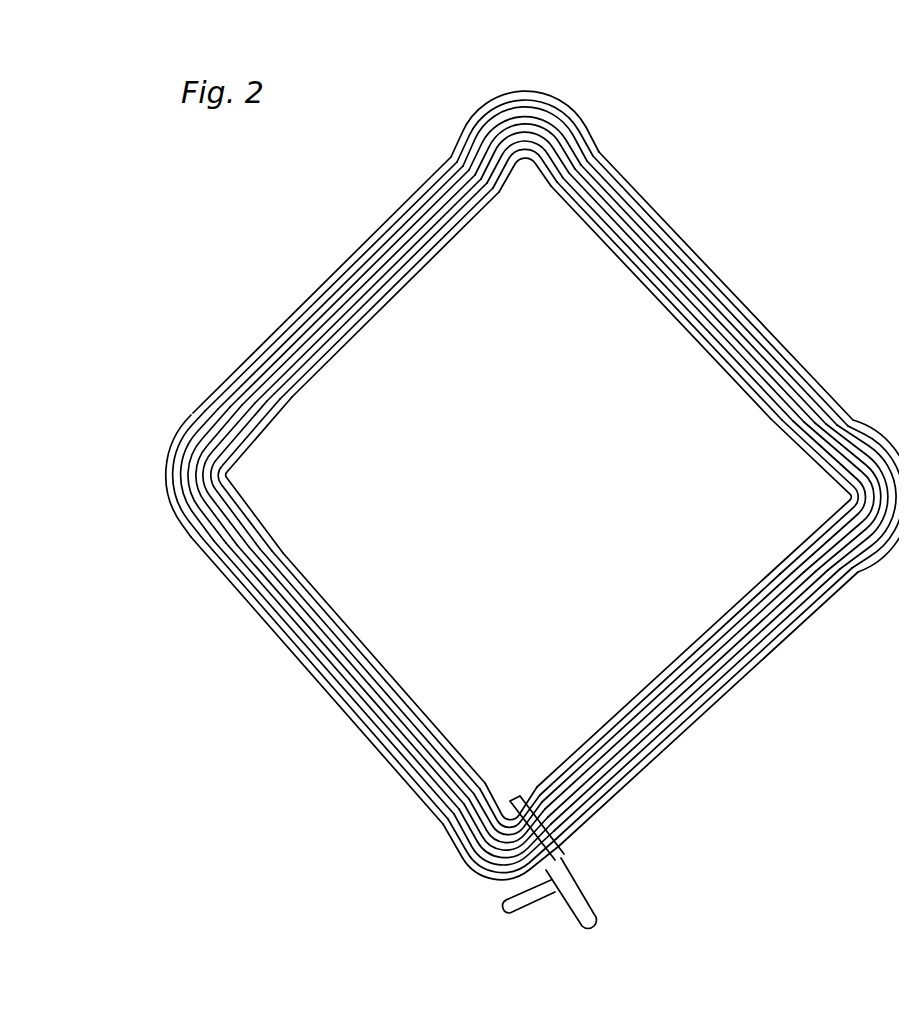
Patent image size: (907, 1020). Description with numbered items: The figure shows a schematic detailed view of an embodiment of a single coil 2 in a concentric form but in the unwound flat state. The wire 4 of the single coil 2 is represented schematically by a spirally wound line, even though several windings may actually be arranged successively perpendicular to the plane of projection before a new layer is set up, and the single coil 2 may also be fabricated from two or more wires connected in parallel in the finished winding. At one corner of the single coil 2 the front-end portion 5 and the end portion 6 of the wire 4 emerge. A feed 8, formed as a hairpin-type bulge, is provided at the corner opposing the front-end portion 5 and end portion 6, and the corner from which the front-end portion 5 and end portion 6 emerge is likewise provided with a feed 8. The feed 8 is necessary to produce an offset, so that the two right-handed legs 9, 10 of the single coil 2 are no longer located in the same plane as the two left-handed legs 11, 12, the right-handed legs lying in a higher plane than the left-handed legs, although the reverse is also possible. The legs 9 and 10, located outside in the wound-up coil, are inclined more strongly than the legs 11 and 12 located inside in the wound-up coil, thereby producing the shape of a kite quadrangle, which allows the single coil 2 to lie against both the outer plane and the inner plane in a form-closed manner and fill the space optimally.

The single coil 2 is at (532, 516).
The wire 4 is at (740, 668).
The front-end portion 5 is at (546, 828).
The end portion 6 is at (550, 899).
The feed 8 is at (508, 780).
The right-handed leg 9 is at (702, 289).
The right-handed leg 10 is at (694, 703).
The left-handed leg 11 is at (338, 680).
The left-handed leg 12 is at (346, 285).